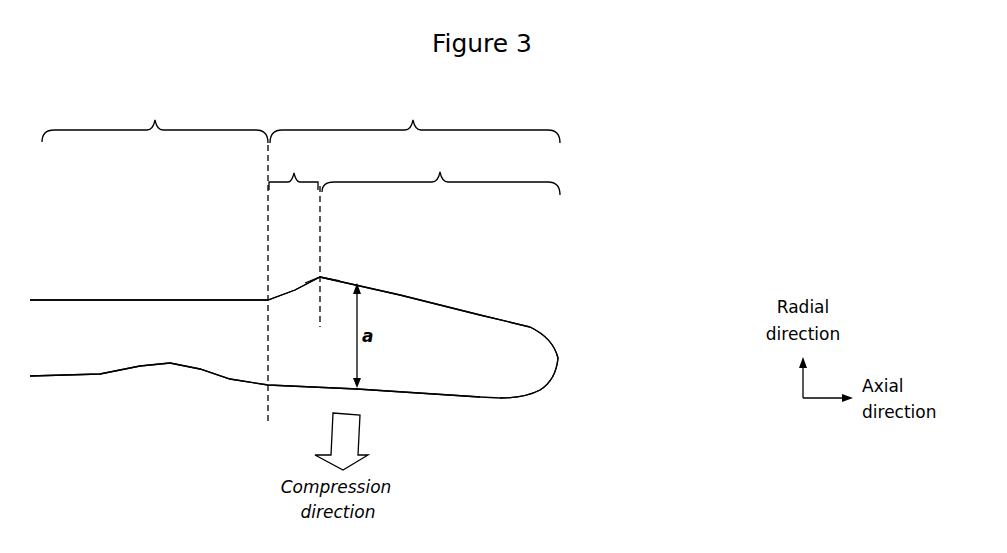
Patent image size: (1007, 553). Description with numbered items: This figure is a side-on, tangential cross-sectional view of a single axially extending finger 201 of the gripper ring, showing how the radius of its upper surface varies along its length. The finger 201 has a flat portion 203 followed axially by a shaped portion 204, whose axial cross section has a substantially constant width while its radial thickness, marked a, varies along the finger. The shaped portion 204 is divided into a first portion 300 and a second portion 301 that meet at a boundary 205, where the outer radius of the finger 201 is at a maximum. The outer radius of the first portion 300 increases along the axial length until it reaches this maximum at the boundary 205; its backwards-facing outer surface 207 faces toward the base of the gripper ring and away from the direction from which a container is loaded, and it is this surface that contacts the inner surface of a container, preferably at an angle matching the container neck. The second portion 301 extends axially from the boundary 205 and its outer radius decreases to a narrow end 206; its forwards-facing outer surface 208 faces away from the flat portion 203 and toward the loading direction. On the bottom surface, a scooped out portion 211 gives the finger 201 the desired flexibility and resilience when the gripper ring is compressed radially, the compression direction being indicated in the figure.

The axially extending finger 201 is at (598, 227).
The flat portion 203 is at (149, 196).
The shaped portion 204 is at (415, 117).
The boundary 205 is at (326, 266).
The narrow end 206 is at (569, 355).
The first outer surface 207 is at (284, 272).
The second outer surface 208 is at (439, 293).
The scooped out portion 211 is at (170, 374).
The first portion 300 is at (294, 285).
The second portion 301 is at (441, 172).